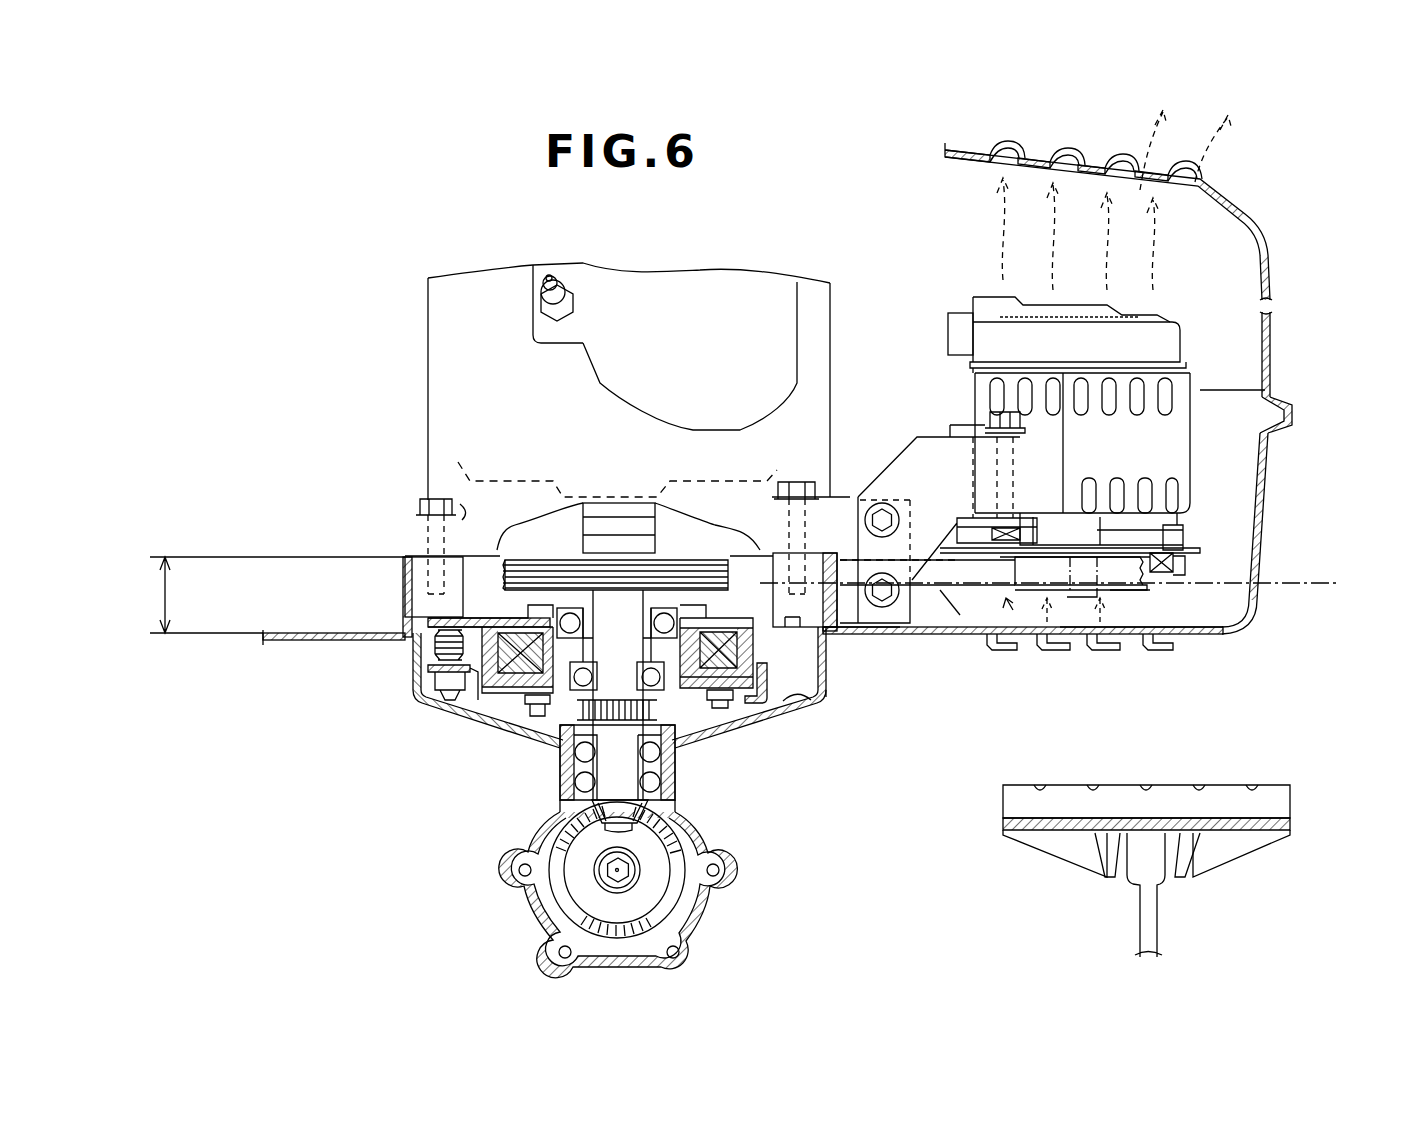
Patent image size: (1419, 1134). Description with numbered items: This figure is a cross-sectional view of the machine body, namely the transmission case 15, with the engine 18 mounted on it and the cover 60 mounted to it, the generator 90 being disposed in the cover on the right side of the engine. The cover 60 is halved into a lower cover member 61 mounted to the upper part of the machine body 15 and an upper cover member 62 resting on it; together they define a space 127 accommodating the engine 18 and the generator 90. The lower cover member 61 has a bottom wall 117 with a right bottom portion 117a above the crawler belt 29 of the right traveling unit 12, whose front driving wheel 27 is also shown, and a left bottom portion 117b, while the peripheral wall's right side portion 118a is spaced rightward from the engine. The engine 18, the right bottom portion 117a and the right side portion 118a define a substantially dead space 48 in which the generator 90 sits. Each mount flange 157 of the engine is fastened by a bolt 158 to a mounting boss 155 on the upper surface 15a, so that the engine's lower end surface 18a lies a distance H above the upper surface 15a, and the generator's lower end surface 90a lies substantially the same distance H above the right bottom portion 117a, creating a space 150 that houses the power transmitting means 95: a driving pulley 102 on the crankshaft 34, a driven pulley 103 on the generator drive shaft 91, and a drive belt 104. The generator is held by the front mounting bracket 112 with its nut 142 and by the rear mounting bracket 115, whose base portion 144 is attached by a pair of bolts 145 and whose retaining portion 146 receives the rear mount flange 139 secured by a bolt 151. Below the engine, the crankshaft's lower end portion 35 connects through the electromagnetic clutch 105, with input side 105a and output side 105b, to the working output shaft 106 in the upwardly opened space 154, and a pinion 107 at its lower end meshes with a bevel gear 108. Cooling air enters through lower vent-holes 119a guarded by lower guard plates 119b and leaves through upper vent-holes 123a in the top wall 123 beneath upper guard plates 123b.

The right traveling unit 12 is at (1288, 860).
The transmission case 15 is at (745, 735).
The upper surface 15a is at (814, 700).
The engine 18 is at (447, 335).
The lower end surface 18a is at (403, 568).
The front driving wheel 27 is at (1152, 933).
The crawler belt 29 is at (1233, 782).
The crankshaft 34 is at (612, 525).
The lower end portion 35 is at (608, 627).
The space 48 is at (1235, 478).
The cover 60 is at (1342, 312).
The lower cover member 61 is at (1272, 460).
The upper cover member 62 is at (1272, 333).
The generator 90 is at (989, 280).
The lower end surface 90a is at (1030, 518).
The drive shaft 91 is at (1263, 566).
The power transmitting means 95 is at (950, 603).
The driving pulley 102 is at (682, 560).
The driven pulley 103 is at (1125, 600).
The drive belt 104 is at (970, 572).
The electromagnetic clutch 105 is at (300, 660).
The input side 105a is at (432, 653).
The output side 105b is at (485, 712).
The working output shaft 106 is at (563, 773).
The pinion 107 is at (590, 808).
The bevel gear 108 is at (553, 862).
The front mounting bracket 112 is at (1172, 570).
The rear mounting bracket 115 is at (905, 418).
The bottom wall 117 is at (312, 633).
The right bottom portion 117a is at (945, 640).
The left bottom portion 117b is at (292, 642).
The right side portion 118a is at (1197, 547).
The lower vent-holes 119a is at (1110, 648).
The lower guard plates 119b is at (1097, 648).
The top wall 123 is at (950, 146).
The upper vent-holes 123a is at (1065, 152).
The upper guard plates 123b is at (1055, 150).
The space 127 is at (832, 219).
The rear mount flange 139 is at (1047, 470).
The nut 142 is at (1150, 592).
The base portion 144 is at (900, 477).
The bolts 145 is at (893, 575).
The retaining portion 146 is at (962, 425).
The space 150 is at (1013, 610).
The bolt 151 is at (948, 360).
The space 154 is at (807, 710).
The mounting bosses 155 is at (405, 605).
The mount flanges 157 is at (412, 533).
The bolts 158 is at (440, 500).
The distance H is at (154, 595).